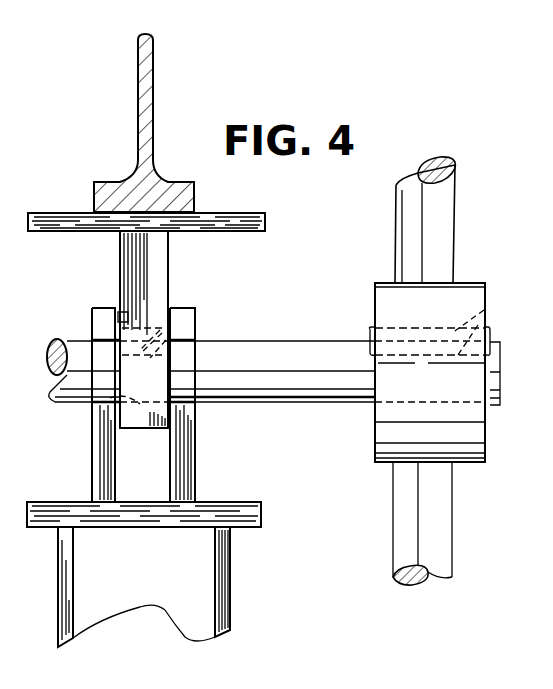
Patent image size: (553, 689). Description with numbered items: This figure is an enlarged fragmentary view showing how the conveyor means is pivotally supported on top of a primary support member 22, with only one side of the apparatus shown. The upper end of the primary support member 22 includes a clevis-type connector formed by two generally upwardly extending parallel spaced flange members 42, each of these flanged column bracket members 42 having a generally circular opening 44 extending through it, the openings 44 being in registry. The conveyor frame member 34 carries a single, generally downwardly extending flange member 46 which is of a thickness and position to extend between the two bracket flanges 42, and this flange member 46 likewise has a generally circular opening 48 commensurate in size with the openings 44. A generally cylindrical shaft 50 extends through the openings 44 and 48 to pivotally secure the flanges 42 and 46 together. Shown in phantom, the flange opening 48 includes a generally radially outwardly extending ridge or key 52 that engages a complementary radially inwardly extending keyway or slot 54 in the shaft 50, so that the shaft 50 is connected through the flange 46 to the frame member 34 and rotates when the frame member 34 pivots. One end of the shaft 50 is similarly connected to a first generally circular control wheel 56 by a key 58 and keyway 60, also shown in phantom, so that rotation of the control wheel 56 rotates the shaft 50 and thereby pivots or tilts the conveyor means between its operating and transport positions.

The primary support member 22 is at (192, 576).
The frame member 34 is at (150, 151).
The flange member 42 is at (100, 455).
The circular opening 44 is at (108, 340).
The downwardly extending flange member 46 is at (148, 280).
The circular opening 48 is at (110, 412).
The cylindrical shaft 50 is at (297, 350).
The key 52 is at (117, 308).
The keyway 54 is at (180, 326).
The control wheel 56 is at (443, 250).
The key 58 is at (485, 308).
The keyway 60 is at (489, 313).